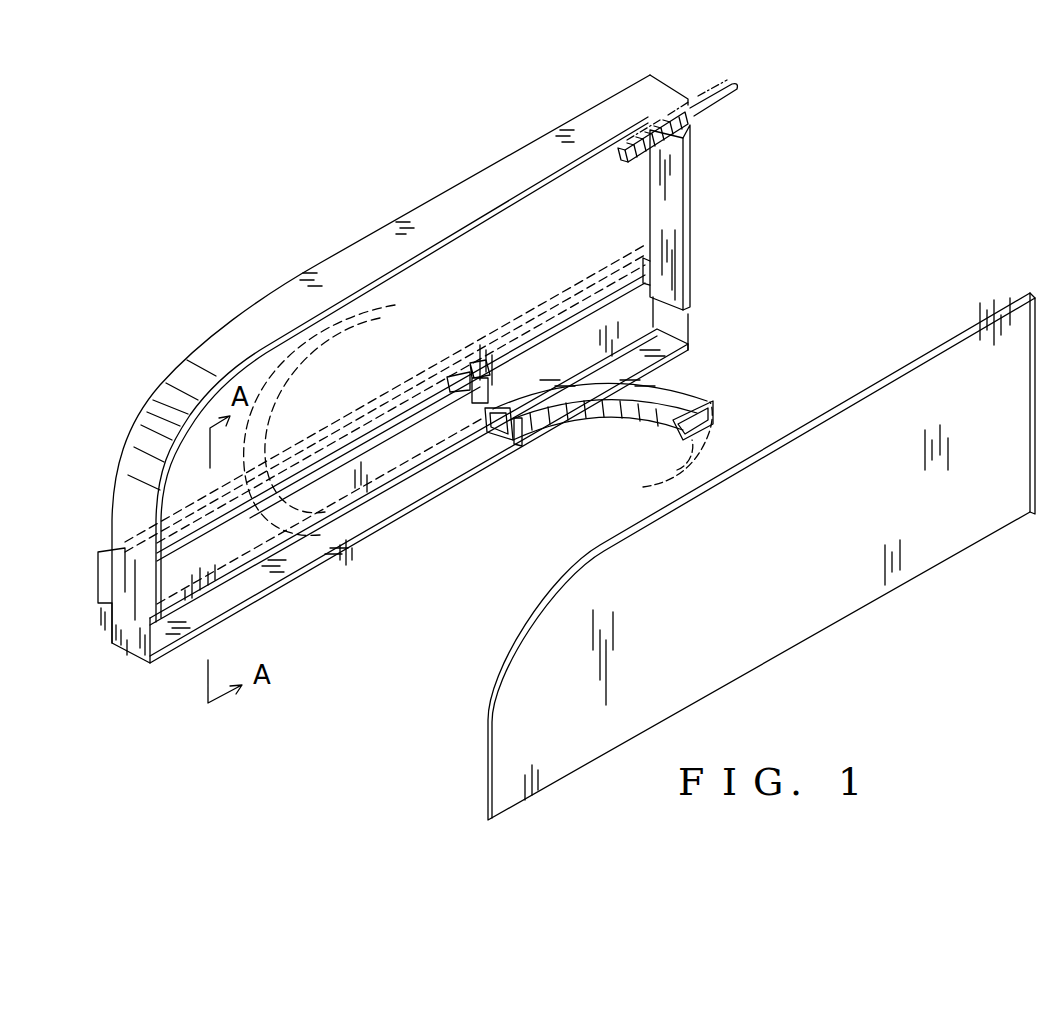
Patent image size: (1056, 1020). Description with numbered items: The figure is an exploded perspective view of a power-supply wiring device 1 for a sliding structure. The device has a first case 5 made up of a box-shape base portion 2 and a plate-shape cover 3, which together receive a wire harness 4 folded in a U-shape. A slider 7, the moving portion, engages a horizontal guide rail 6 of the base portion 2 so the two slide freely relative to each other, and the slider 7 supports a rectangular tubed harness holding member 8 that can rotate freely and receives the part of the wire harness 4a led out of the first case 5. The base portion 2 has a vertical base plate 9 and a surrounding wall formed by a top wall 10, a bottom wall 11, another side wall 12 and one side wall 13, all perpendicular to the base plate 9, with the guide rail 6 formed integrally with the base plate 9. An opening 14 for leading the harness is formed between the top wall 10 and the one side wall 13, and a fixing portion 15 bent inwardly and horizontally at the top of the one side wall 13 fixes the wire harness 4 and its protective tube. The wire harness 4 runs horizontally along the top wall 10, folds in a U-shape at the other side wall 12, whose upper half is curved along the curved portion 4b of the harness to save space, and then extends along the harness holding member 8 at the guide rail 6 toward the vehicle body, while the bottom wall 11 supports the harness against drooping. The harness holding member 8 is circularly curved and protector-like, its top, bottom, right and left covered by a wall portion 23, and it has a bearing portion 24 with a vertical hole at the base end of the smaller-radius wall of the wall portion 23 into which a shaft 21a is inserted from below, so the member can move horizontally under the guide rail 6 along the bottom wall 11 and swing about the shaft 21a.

The power-supply wiring device 1 is at (893, 88).
The base portion 2 is at (708, 78).
The cover 3 is at (1011, 263).
The wire harness 4 is at (372, 317).
The part of the wire harness 4a is at (643, 487).
The curved portion 4b is at (288, 405).
The first case 5 is at (829, 162).
The guide rail 6 is at (583, 303).
The slider 7 is at (467, 398).
The harness holding member 8 is at (677, 386).
The base plate 9 is at (632, 210).
The top wall 10 is at (408, 213).
The bottom wall 11 is at (330, 535).
The other side wall 12 is at (127, 508).
The one side wall 13 is at (668, 243).
The opening 14 is at (697, 118).
The fixing portion 15 is at (630, 162).
The shaft 21a is at (508, 446).
The wall portion 23 is at (607, 424).
The bearing portion 24 is at (518, 441).